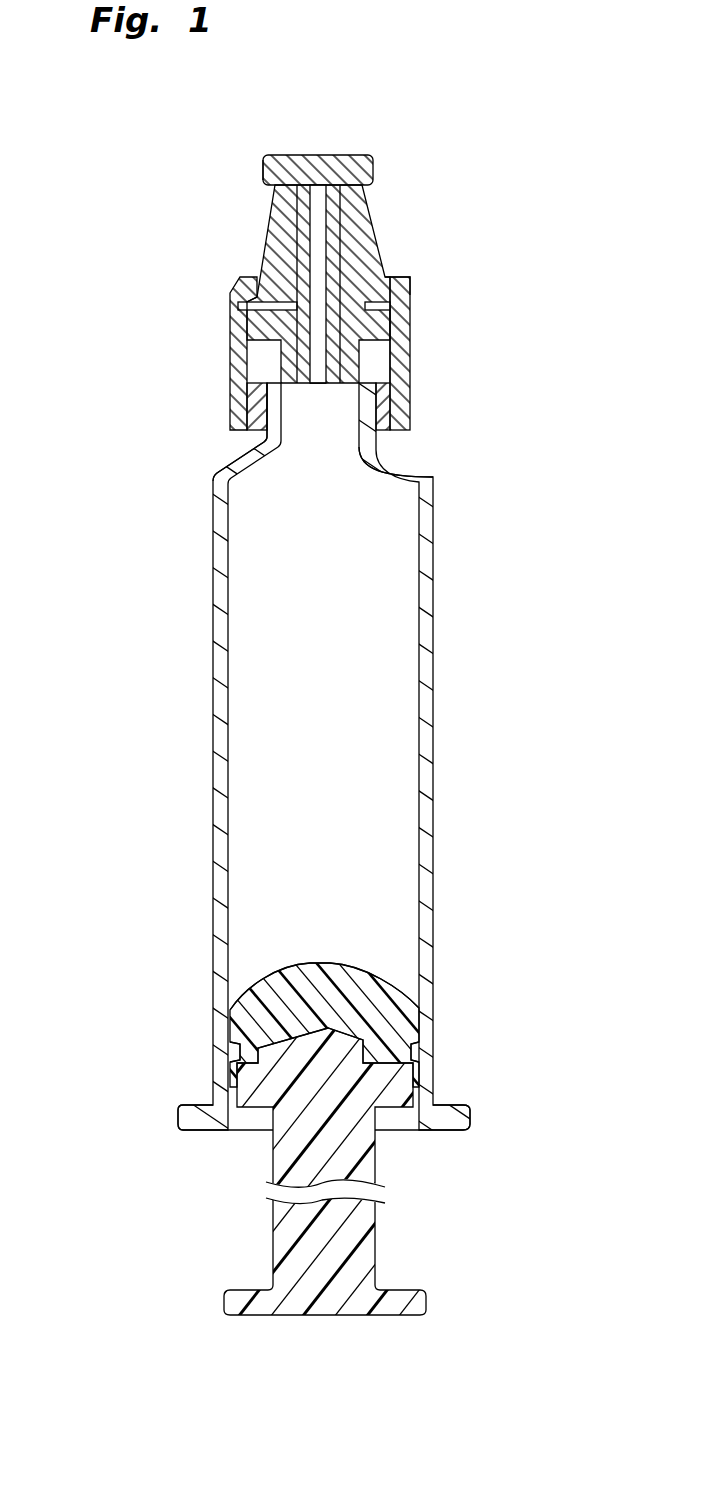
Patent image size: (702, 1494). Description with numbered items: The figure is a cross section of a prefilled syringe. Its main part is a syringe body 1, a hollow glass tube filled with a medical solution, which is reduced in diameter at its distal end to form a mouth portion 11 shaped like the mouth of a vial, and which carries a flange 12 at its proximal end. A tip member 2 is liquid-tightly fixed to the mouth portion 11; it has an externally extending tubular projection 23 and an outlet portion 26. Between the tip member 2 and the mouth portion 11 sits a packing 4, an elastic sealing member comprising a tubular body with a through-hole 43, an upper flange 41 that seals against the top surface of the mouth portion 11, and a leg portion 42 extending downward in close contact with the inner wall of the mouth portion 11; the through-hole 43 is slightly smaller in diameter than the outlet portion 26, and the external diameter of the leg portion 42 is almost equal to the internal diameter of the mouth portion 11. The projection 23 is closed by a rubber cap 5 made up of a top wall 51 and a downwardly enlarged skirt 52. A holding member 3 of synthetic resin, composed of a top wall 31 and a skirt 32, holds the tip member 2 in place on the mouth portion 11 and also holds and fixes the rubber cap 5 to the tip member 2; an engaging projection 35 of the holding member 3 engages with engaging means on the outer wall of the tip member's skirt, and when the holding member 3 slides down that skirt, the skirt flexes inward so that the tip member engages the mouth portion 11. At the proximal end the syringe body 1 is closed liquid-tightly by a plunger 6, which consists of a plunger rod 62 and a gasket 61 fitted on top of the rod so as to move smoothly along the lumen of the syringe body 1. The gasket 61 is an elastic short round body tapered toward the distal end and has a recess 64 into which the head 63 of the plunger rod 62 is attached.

The syringe body 1 is at (447, 727).
The mouth portion 11 is at (231, 426).
The flange 12 is at (182, 1116).
The tip member 2 is at (372, 245).
The externally extending projection 23 is at (343, 220).
The outlet portion 26 is at (234, 318).
The holding member 3 is at (418, 358).
The top wall 31 is at (410, 280).
The skirt 32 is at (411, 327).
The engaging projection 35 is at (380, 452).
The packing 4 is at (366, 363).
The upper flange 41 is at (257, 278).
The leg portion 42 is at (238, 370).
The through-hole 43 is at (316, 388).
The rubber cap 5 is at (385, 170).
The top wall 51 is at (263, 165).
The skirt 52 is at (283, 212).
The plunger 6 is at (400, 982).
The gasket 61 is at (408, 1018).
The plunger rod 62 is at (377, 1163).
The head 63 is at (258, 1048).
The recess 64 is at (380, 1063).